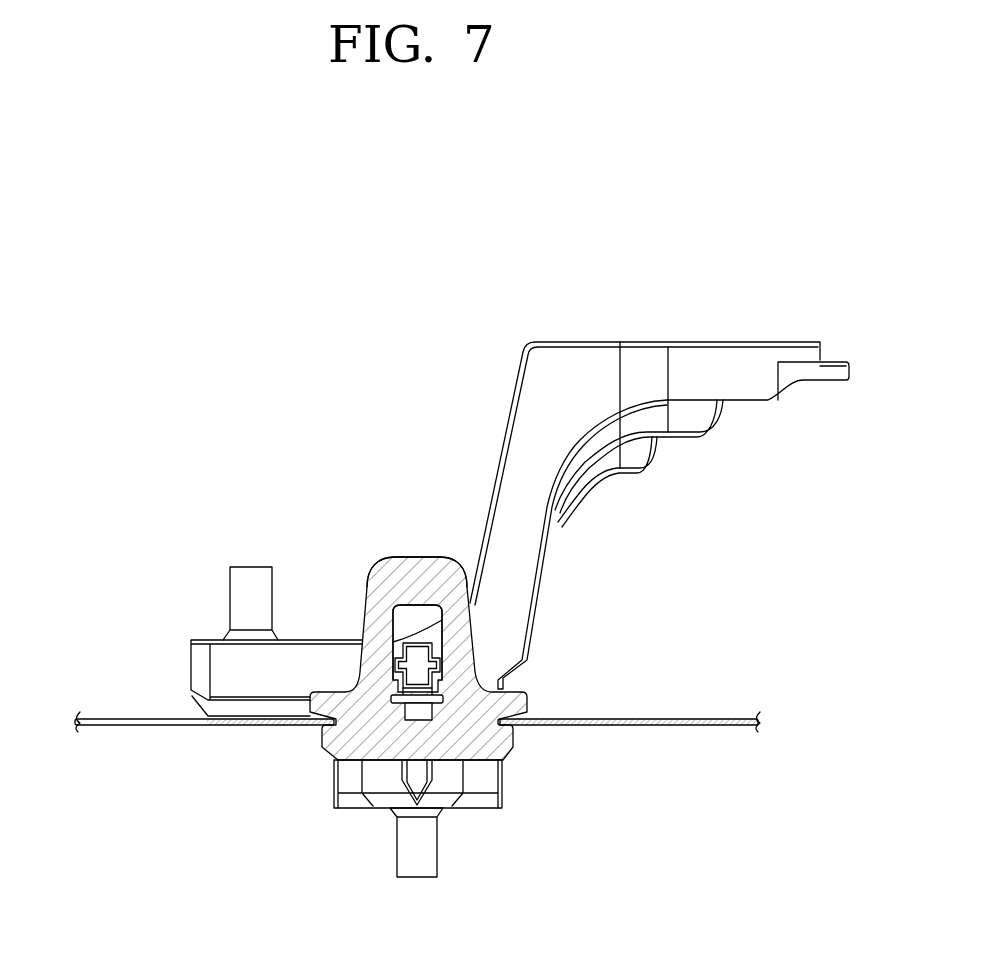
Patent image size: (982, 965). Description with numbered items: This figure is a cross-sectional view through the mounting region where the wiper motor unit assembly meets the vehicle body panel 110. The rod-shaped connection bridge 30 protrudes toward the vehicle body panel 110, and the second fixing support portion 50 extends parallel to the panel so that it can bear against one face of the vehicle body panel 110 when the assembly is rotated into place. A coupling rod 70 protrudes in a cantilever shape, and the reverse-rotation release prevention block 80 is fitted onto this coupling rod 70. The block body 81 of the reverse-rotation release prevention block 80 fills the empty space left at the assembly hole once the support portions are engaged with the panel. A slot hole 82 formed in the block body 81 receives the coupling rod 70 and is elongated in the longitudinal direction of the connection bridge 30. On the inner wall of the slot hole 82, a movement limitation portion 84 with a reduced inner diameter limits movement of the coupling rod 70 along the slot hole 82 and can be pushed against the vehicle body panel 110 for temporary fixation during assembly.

The connection bridge 30 is at (542, 567).
The second fixing support portion 50 is at (186, 632).
The coupling rod 70 is at (415, 668).
The reverse-rotation release prevention block 80 is at (418, 614).
The block body 81 is at (398, 565).
The slot hole 82 is at (407, 618).
The movement limitation portion 84 is at (398, 682).
The vehicle body panel 110 is at (673, 717).